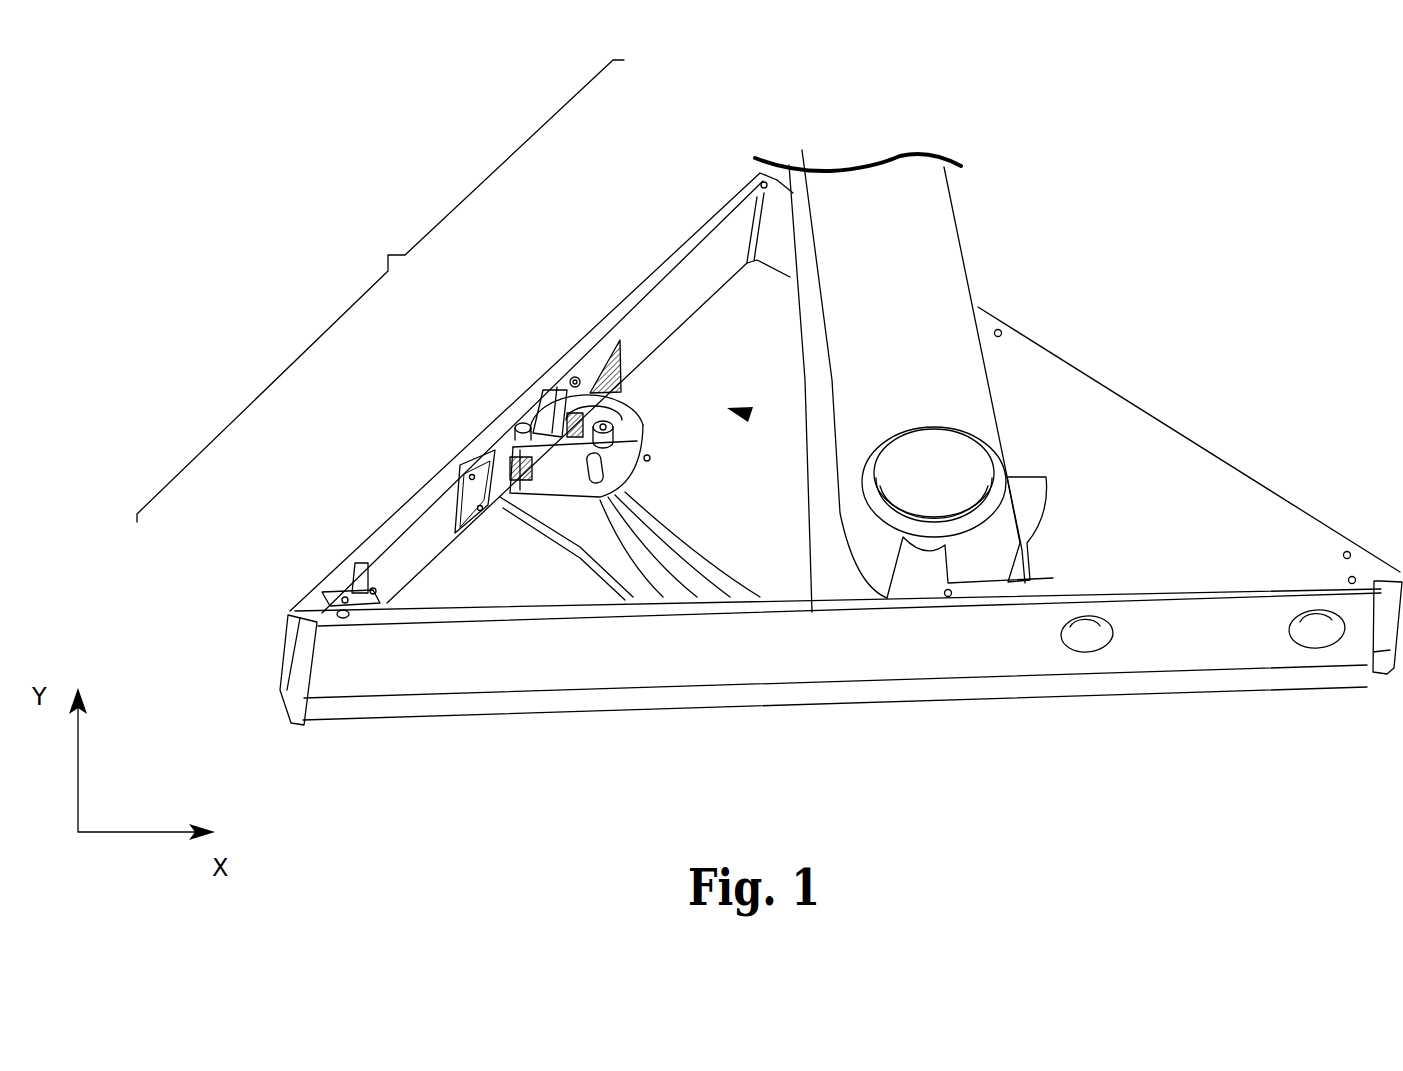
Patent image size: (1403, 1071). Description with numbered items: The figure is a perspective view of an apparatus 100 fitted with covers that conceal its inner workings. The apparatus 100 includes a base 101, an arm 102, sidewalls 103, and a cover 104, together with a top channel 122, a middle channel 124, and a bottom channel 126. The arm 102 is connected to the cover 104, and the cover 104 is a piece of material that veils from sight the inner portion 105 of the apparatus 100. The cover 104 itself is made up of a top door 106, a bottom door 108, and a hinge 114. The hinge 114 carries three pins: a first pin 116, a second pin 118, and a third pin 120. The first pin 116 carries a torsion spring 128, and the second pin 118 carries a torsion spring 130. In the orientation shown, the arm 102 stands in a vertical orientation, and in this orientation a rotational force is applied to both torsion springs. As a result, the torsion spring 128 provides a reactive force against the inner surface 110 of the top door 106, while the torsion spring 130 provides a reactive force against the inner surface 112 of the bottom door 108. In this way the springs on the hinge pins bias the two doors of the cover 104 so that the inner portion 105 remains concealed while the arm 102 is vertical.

The apparatus 100 is at (208, 76).
The base 101 is at (547, 657).
The arm 102 is at (912, 193).
The sidewalls 103 is at (758, 322).
The cover 104 is at (380, 291).
The inner portion 105 is at (727, 408).
The top door 106 is at (713, 223).
The bottom door 108 is at (440, 483).
The inner surface 110 is at (687, 283).
The inner surface 112 is at (412, 545).
The hinge 114 is at (623, 445).
The first pin 116 is at (575, 376).
The second pin 118 is at (594, 510).
The third pin 120 is at (512, 427).
The top channel 122 is at (606, 504).
The middle channel 124 is at (600, 507).
The bottom channel 126 is at (547, 555).
The torsion spring 128 is at (550, 390).
The torsion spring 130 is at (540, 470).